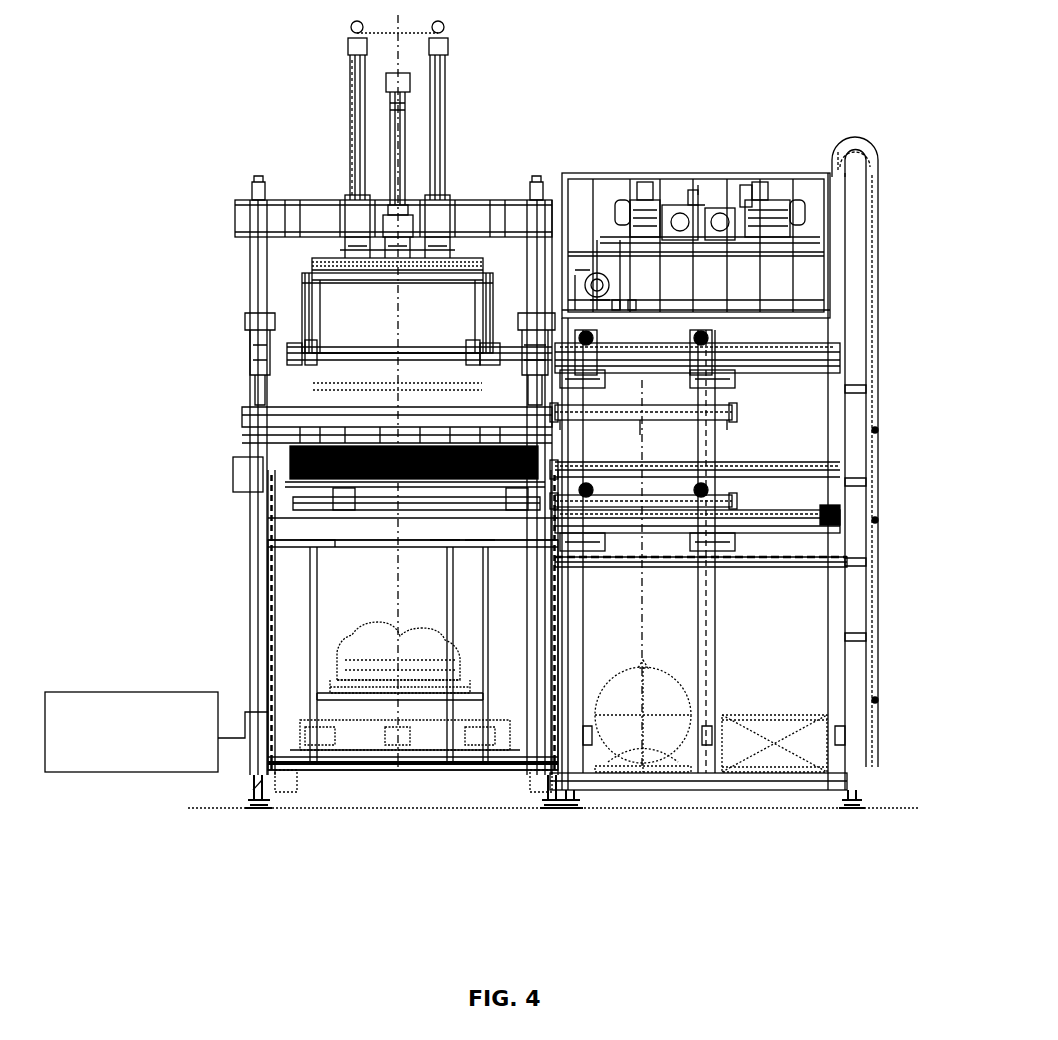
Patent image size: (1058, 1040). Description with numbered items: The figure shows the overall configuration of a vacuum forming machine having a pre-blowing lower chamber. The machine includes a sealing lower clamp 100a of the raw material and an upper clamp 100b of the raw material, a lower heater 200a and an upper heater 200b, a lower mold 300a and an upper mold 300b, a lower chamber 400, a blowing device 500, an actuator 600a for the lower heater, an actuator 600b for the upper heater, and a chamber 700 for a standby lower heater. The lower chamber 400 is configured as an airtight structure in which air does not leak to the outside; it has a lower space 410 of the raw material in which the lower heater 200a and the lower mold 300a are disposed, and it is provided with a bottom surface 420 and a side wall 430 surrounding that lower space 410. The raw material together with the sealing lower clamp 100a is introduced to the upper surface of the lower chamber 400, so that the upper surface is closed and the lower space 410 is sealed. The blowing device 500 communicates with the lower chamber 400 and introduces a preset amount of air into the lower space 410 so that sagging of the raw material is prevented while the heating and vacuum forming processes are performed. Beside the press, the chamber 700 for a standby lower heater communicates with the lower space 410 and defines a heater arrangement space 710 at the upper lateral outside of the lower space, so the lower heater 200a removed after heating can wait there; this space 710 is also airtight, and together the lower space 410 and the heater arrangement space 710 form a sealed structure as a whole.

The sealing lower clamp 100a is at (319, 454).
The upper clamp 100b is at (290, 445).
The lower heater 200a is at (737, 495).
The upper heater 200b is at (738, 413).
The lower mold 300a is at (364, 672).
The upper mold 300b is at (318, 297).
The lower chamber 400 is at (357, 666).
The lower space of the raw material 410 is at (296, 618).
The bottom surface 420 is at (462, 766).
The side wall 430 is at (268, 582).
The blowing device 500 is at (110, 775).
The actuator for the lower heater 600a is at (818, 531).
The actuator for the upper heater 600b is at (818, 381).
The chamber for a standby lower heater 700 is at (777, 558).
The heater arrangement space 710 is at (818, 481).